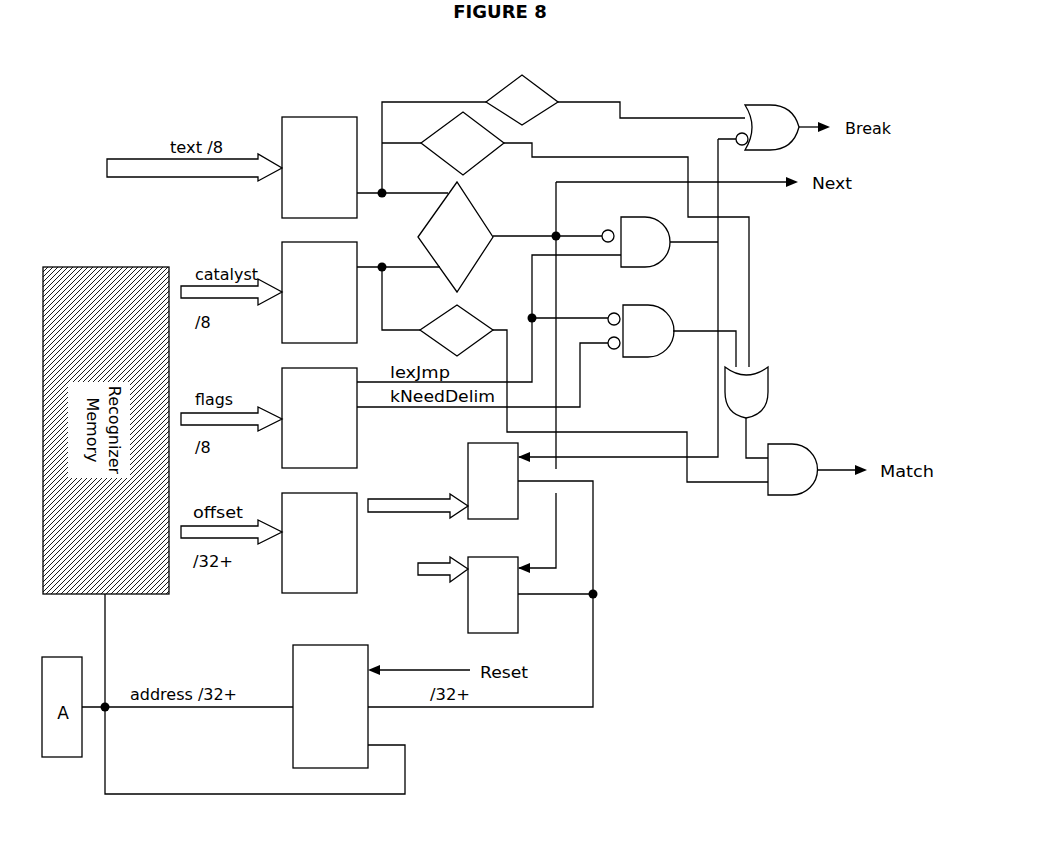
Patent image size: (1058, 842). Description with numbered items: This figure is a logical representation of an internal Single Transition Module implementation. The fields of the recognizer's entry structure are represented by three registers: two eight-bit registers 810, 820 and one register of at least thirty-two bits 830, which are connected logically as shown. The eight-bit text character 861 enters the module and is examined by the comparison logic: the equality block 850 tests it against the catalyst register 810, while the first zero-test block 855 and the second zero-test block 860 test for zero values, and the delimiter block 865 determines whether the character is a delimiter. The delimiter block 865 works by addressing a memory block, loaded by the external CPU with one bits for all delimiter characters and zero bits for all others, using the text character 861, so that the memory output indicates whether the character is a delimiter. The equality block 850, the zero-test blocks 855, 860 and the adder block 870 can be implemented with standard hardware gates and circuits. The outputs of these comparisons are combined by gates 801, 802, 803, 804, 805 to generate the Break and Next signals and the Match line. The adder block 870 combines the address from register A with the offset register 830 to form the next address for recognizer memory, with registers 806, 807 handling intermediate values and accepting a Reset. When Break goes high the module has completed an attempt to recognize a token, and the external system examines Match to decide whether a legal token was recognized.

The NOR gate producing Break 801 is at (768, 104).
The AND gate 802 is at (645, 268).
The AND gate 803 is at (640, 358).
The OR gate 804 is at (769, 395).
The AND gate producing Match 805 is at (775, 497).
The register 806 is at (493, 481).
The register 807 is at (493, 595).
The 8-bit register 810 is at (319, 292).
The 8-bit register 820 is at (319, 418).
The register of at least 32 bits 830 is at (319, 543).
The "=?" block 850 is at (466, 197).
The "0?" block 855 is at (549, 93).
The "0?" block 860 is at (464, 309).
The 8-bit text character 861 is at (319, 167).
The "delim?" block 865 is at (440, 128).
The "Add" block 870 is at (293, 735).